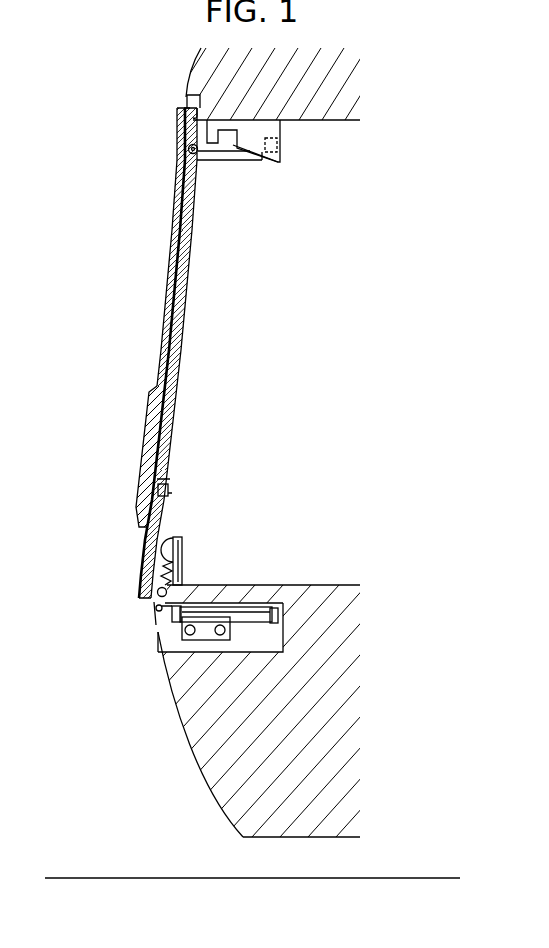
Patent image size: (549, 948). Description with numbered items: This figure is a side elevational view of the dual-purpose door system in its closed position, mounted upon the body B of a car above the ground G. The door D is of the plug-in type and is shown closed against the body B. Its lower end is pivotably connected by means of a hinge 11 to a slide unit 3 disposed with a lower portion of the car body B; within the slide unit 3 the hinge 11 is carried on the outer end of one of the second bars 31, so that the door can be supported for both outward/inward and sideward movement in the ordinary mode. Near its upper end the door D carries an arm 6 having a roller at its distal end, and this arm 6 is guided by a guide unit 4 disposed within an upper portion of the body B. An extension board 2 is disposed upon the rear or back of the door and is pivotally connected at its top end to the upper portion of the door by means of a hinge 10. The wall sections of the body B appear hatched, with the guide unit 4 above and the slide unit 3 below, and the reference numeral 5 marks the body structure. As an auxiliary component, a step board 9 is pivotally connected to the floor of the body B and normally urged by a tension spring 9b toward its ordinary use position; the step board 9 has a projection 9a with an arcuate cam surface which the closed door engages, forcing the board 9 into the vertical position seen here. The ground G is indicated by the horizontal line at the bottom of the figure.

The extension board 2 is at (181, 380).
The slide unit 3 is at (245, 642).
The guide unit 4 is at (276, 182).
The vehicle body 5 is at (203, 72).
The arm 6 is at (229, 163).
The step board 9 is at (183, 544).
The projection 9a is at (168, 538).
The tension spring 9b is at (181, 578).
The hinge 10 is at (188, 146).
The hinge 11 is at (158, 611).
The second bars 31 is at (263, 623).
The door D is at (158, 356).
The body B is at (166, 723).
The ground G is at (80, 878).